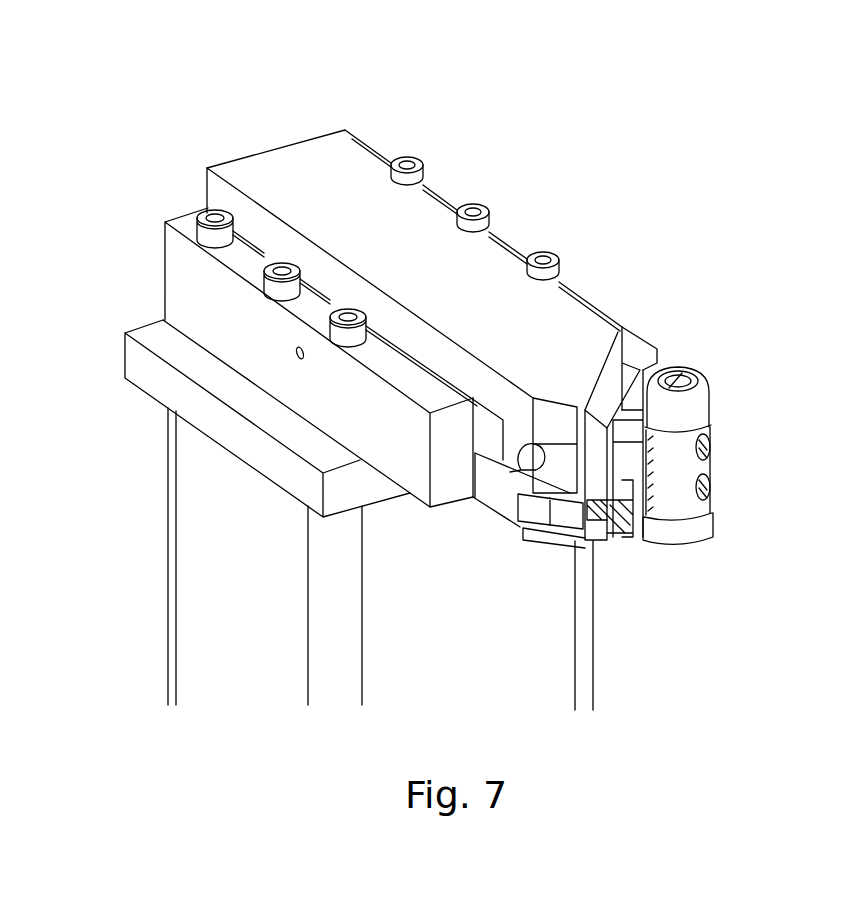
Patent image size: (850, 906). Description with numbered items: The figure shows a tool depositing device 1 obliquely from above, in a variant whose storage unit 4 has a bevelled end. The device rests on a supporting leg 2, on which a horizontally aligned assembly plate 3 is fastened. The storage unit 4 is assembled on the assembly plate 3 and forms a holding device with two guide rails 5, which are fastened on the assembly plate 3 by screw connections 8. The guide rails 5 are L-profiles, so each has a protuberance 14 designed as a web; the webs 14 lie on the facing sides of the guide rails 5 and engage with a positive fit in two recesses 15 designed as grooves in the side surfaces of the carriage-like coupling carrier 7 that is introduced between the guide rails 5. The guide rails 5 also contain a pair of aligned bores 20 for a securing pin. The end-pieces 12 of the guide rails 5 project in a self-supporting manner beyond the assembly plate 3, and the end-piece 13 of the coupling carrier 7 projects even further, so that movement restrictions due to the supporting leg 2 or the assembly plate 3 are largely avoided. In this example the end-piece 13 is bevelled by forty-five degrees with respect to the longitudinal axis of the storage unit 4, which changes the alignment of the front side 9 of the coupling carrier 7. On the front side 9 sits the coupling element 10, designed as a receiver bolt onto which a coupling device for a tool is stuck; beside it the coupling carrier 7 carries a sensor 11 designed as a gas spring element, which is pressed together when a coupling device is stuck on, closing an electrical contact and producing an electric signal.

The tool depositing device 1 is at (722, 92).
The supporting leg 2 is at (198, 505).
The assembly plate 3 is at (160, 380).
The storage unit 4 is at (540, 150).
The guide rails 5 is at (186, 275).
The coupling carrier 7 is at (272, 165).
The screw connections 8 is at (409, 158).
The front side 9 is at (613, 352).
The coupling element 10 is at (700, 402).
The sensor 11 is at (607, 520).
The end-pieces 12 is at (422, 448).
The end-piece 13 is at (540, 392).
The protuberance 14 is at (483, 430).
The recesses 15 is at (510, 442).
The bores 20 is at (297, 352).